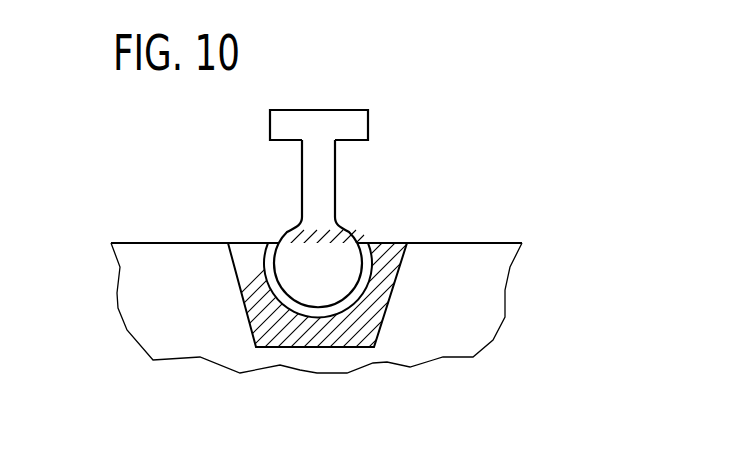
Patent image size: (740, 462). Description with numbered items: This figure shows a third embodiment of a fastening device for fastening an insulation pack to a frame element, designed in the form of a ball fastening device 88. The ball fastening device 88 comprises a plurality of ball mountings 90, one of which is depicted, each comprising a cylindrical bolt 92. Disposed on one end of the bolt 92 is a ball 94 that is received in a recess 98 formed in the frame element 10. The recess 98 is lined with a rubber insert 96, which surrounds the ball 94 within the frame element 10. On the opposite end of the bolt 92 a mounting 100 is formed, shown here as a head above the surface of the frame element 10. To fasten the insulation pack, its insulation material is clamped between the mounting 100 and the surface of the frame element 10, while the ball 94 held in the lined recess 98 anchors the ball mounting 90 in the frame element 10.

The frame element 10 is at (488, 285).
The ball fastening device 88 is at (463, 198).
The ball mounting 90 is at (320, 178).
The cylindrical bolt 92 is at (310, 192).
The ball 94 is at (298, 242).
The rubber insert 96 is at (372, 312).
The recess 98 is at (392, 270).
The mounting 100 is at (317, 118).